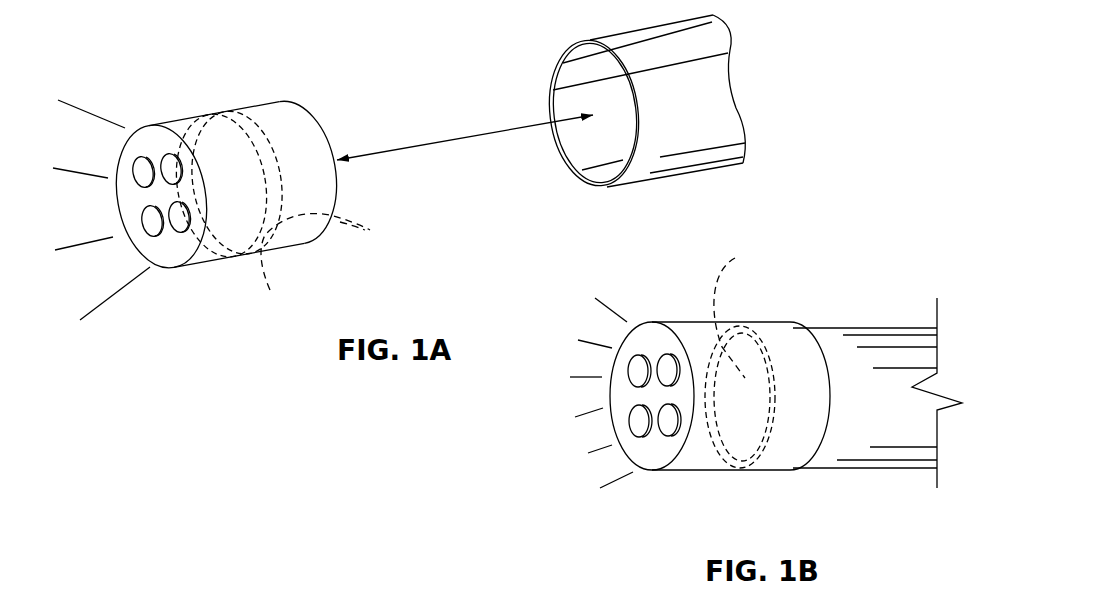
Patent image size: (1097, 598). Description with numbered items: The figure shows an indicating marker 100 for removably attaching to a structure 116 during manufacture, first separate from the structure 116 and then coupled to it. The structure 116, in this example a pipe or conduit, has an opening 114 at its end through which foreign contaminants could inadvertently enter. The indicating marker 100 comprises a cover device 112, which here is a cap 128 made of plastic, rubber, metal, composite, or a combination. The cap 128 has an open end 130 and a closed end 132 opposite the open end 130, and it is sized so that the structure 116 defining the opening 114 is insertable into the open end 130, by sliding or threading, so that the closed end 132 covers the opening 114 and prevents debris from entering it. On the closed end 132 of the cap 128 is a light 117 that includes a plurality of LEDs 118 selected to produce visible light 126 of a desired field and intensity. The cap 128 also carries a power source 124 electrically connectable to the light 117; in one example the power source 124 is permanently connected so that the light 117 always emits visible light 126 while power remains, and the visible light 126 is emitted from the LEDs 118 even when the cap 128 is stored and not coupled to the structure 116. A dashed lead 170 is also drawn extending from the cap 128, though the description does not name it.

In FIG. 1A, the indicating marker 100 is at (263, 57).
In FIG. 1B, the indicating marker 100 is at (767, 300).
In FIG. 1A, the cover device 112 is at (222, 103).
In FIG. 1B, the cover device 112 is at (778, 472).
In FIG. 1A, the opening 114 is at (577, 80).
In FIG. 1B, the opening 114 is at (735, 258).
In FIG. 1A, the structure 116 is at (682, 142).
In FIG. 1B, the structure 116 is at (847, 347).
In FIG. 1A, the light 117 is at (150, 243).
In FIG. 1B, the light 117 is at (637, 443).
In FIG. 1A, the LEDs 118 is at (160, 157).
In FIG. 1B, the LEDs 118 is at (663, 365).
In FIG. 1A, the power source 124 is at (272, 286).
In FIG. 1A, the visible light 126 is at (113, 303).
In FIG. 1B, the visible light 126 is at (617, 303).
In FIG. 1A, the cap 128 is at (270, 242).
In FIG. 1B, the cap 128 is at (705, 458).
In FIG. 1A, the open end 130 is at (313, 110).
In FIG. 1A, the closed end 132 is at (170, 250).
In FIG. 1A, the lumen line 170 is at (370, 230).